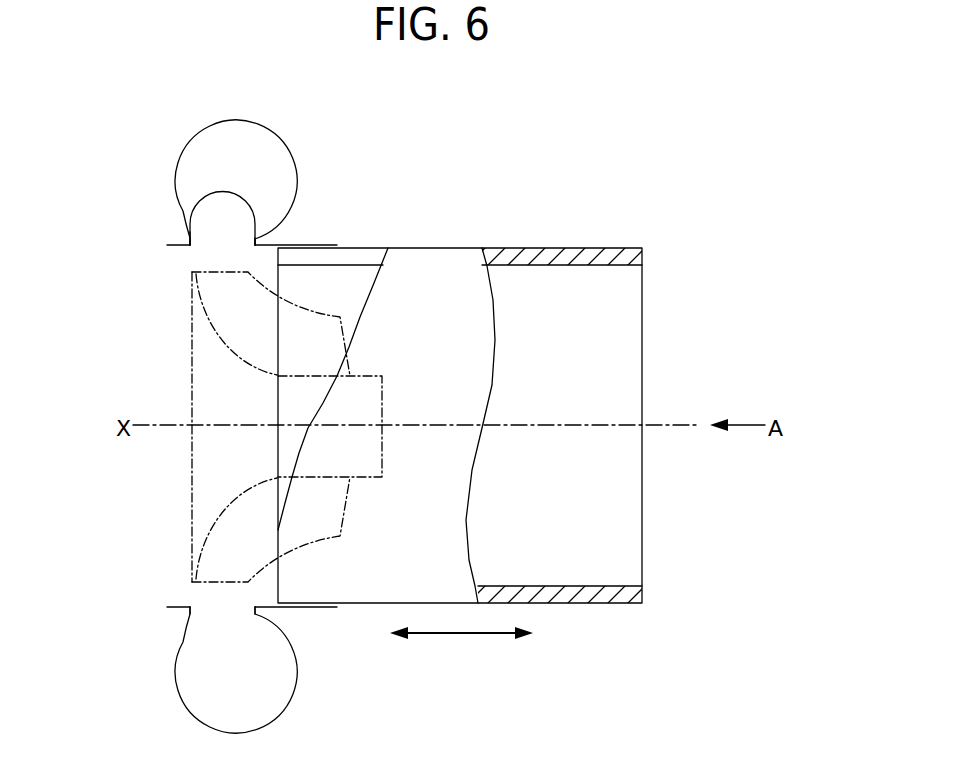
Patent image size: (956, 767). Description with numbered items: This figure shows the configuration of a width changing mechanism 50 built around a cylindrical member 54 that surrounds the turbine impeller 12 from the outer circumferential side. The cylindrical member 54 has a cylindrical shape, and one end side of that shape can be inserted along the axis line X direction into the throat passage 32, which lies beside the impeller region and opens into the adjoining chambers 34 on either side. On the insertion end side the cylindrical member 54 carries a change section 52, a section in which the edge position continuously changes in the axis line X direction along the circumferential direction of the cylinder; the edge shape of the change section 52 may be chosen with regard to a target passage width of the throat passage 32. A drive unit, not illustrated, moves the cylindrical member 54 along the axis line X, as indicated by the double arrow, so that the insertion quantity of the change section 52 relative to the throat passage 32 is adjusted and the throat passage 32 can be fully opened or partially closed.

The turbine impeller 12 is at (178, 490).
The throat passage 32 is at (218, 243).
The balloon / chamber 34 is at (239, 233).
The width changing mechanism 50 is at (633, 188).
The change section 52 is at (308, 398).
The cylindrical member 54 is at (510, 247).